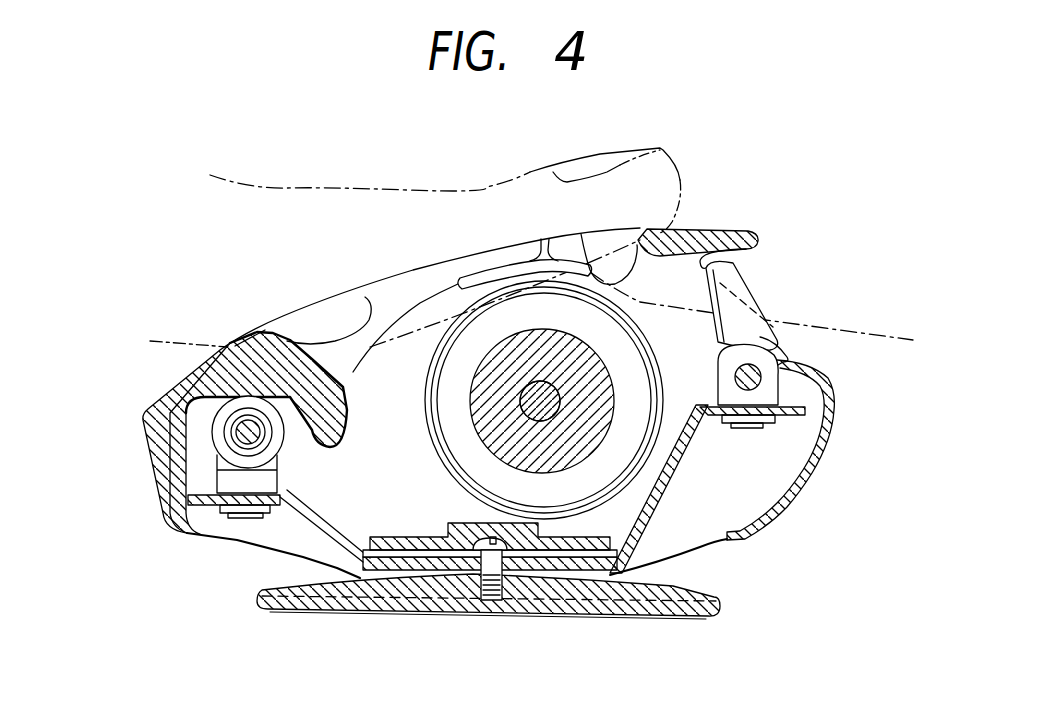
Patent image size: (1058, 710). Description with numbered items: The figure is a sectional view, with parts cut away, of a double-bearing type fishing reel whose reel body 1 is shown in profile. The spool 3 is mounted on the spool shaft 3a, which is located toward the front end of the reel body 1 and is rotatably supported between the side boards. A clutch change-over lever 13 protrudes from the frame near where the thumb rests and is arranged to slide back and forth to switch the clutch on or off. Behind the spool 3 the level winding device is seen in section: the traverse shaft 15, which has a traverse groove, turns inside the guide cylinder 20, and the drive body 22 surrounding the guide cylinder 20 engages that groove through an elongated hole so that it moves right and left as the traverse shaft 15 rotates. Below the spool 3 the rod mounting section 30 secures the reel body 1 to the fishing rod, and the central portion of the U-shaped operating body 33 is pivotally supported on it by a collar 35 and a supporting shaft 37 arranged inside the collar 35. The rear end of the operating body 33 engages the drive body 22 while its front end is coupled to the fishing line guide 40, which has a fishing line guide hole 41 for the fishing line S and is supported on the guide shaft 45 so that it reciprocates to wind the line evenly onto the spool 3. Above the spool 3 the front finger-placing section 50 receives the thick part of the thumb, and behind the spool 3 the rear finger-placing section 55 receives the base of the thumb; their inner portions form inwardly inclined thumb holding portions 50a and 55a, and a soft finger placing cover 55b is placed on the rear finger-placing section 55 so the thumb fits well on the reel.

The reel body 1 is at (745, 165).
The spool 3 is at (485, 423).
The spool shaft 3a is at (535, 400).
The clutch change-over lever 13 is at (543, 238).
The traverse shaft 15 is at (240, 437).
The guide cylinder 20 is at (277, 443).
The drive body 22 is at (227, 483).
The rod mounting section 30 is at (663, 593).
The operating body 33 is at (330, 540).
The collar 35 is at (473, 570).
The supporting shaft 37 is at (500, 600).
The fishing line guide 40 is at (770, 340).
The fishing line guide hole 41 is at (763, 303).
The guide shaft 45 is at (763, 382).
The front finger-placing section 50 is at (750, 234).
The thumb holding portion 50a is at (647, 231).
The rear finger-placing section 55 is at (482, 403).
The thumb holding portion 55a is at (288, 338).
The finger placing cover 55b is at (173, 388).
The fishing line S is at (880, 333).